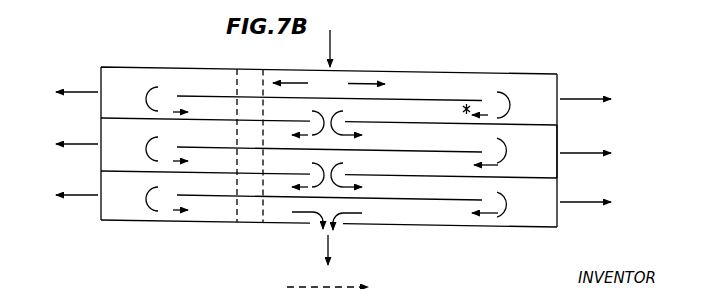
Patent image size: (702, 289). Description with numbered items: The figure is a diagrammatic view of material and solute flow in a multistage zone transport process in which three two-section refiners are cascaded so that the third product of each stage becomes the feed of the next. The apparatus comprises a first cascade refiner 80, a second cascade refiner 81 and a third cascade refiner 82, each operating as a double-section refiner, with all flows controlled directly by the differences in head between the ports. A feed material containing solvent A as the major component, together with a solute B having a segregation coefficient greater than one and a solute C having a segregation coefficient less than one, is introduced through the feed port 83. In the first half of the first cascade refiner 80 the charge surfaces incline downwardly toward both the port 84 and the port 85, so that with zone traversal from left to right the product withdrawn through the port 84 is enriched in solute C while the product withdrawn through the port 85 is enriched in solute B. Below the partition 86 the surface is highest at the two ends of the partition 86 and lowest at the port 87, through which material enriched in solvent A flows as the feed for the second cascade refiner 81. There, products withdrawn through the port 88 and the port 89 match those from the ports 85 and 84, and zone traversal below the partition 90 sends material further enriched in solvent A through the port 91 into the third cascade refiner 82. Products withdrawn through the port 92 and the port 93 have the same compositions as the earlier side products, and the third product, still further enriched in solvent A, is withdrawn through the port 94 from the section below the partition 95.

The first cascade refiner 80 is at (528, 90).
The second cascade refiner 81 is at (545, 149).
The third cascade refiner 82 is at (545, 210).
The feed port 83 is at (333, 70).
The port 84 is at (562, 97).
The port 85 is at (98, 90).
The partition 86 is at (458, 98).
The port 87 is at (327, 112).
The port 88 is at (98, 143).
The port 89 is at (561, 155).
The partition 90 is at (440, 152).
The port 91 is at (328, 182).
The port 92 is at (98, 193).
The port 93 is at (558, 202).
The port 94 is at (320, 231).
The partition 95 is at (445, 203).